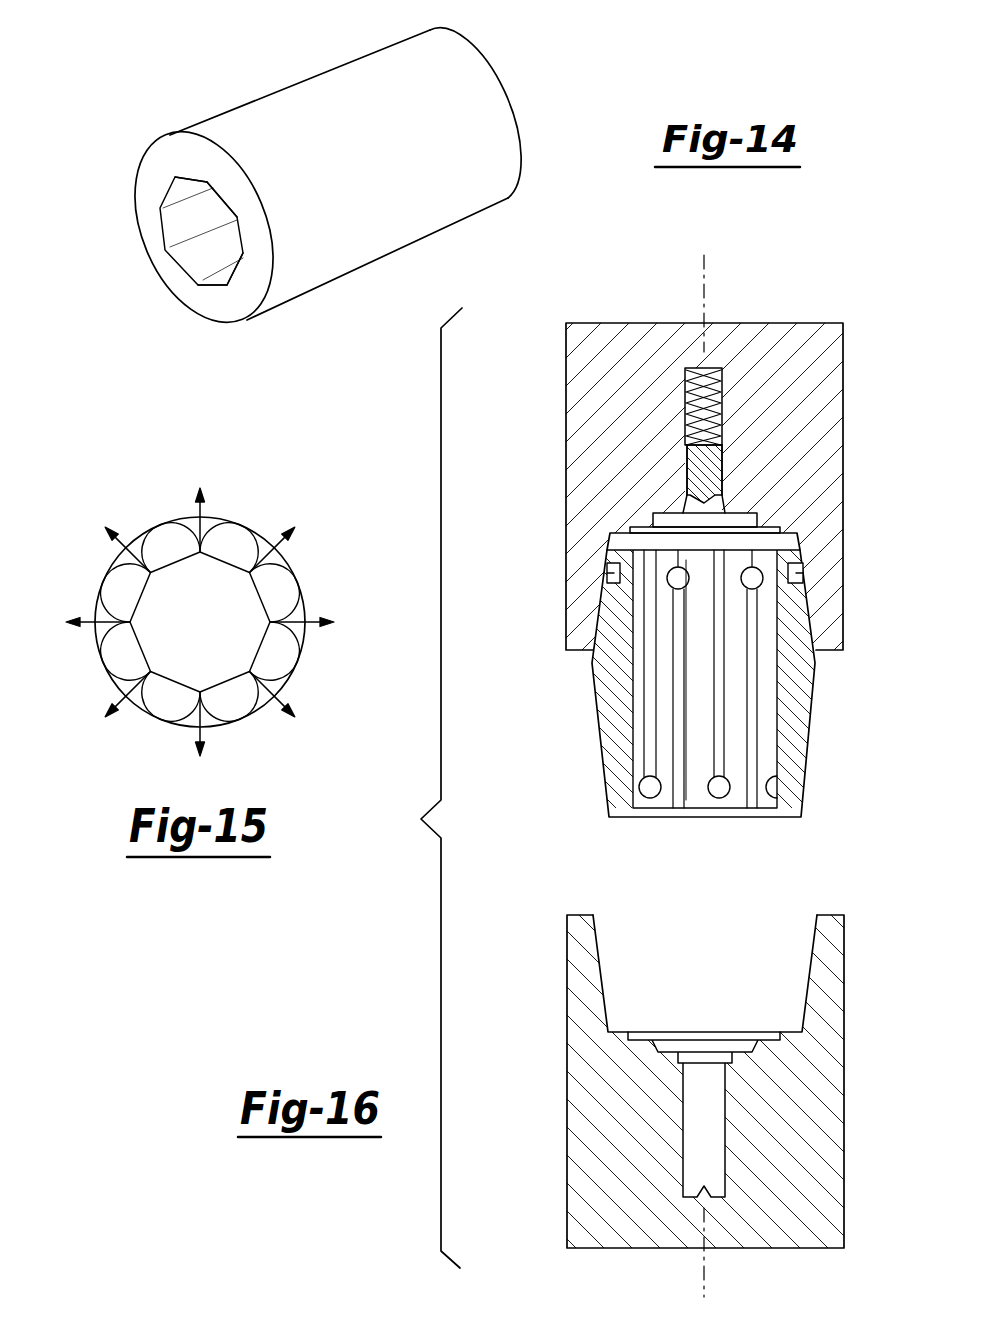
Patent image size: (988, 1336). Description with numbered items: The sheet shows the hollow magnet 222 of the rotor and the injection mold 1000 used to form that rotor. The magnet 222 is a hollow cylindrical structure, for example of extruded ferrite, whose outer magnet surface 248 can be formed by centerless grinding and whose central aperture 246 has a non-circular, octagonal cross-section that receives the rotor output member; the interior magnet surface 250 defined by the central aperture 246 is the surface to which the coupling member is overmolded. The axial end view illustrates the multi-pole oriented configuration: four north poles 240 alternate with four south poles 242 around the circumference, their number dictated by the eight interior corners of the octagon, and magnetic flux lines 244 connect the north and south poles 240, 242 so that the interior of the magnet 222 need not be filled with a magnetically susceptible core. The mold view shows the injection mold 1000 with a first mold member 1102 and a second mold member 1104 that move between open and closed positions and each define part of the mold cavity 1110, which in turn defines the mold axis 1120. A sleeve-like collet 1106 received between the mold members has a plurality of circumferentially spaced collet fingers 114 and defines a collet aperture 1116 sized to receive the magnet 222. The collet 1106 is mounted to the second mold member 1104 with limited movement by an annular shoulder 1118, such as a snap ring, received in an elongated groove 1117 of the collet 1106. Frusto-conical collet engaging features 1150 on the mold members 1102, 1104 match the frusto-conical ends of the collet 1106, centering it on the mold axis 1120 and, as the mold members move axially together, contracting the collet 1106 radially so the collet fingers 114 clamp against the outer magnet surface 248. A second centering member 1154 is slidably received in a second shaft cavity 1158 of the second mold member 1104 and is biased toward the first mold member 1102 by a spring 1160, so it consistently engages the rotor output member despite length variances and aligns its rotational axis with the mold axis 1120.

In FIG. 14, the magnet 222 is at (277, 58).
In FIG. 15, the magnet 222 is at (127, 475).
In FIG. 14, the north poles 240 is at (162, 143).
In FIG. 15, the north poles 240 is at (200, 516).
In FIG. 14, the south poles 242 is at (213, 145).
In FIG. 15, the south poles 242 is at (272, 551).
In FIG. 15, the magnetic flux lines 244 is at (151, 573).
In FIG. 14, the central aperture 246 is at (222, 252).
In FIG. 14, the outer magnet surface 248 is at (488, 152).
In FIG. 14, the interior magnet surface 250 is at (174, 221).
In FIG. 15, the interior magnet surface 250 is at (156, 668).
In FIG. 16, the injection mold 1000 is at (416, 788).
In FIG. 16, the first mold member 1102 is at (817, 1113).
In FIG. 16, the second mold member 1104 is at (827, 380).
In FIG. 16, the collet 1106 is at (805, 672).
In FIG. 16, the mold cavity 1110 is at (663, 1048).
In FIG. 16, the collet fingers 114 is at (740, 753).
In FIG. 16, the collet aperture 1116 is at (727, 702).
In FIG. 16, the elongated groove 1117 is at (797, 573).
In FIG. 16, the annular shoulder 1118 is at (607, 566).
In FIG. 16, the mold axis 1120 is at (705, 267).
In FIG. 16, the collet engaging features 1150 is at (812, 623).
In FIG. 16, the second centering member 1154 is at (710, 457).
In FIG. 16, the second shaft cavity 1158 is at (683, 458).
In FIG. 16, the spring 1160 is at (720, 368).